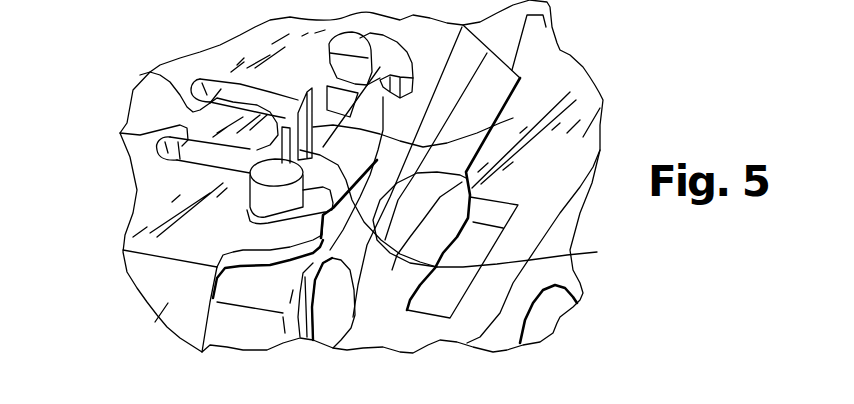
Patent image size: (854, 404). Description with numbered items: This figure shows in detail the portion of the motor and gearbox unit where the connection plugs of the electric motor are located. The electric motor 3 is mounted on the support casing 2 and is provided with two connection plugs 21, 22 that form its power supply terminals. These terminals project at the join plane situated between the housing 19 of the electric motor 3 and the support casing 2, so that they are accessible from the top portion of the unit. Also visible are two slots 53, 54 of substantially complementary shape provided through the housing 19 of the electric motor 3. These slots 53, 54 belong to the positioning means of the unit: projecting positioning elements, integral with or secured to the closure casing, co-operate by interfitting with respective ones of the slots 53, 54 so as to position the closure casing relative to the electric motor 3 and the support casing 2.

The support casing 2 is at (603, 100).
The electric motor 3 is at (147, 213).
The housing 19 is at (168, 303).
The connection plug 21 is at (519, 84).
The connection plug 22 is at (597, 252).
The slot 53 is at (150, 73).
The slot 54 is at (120, 133).